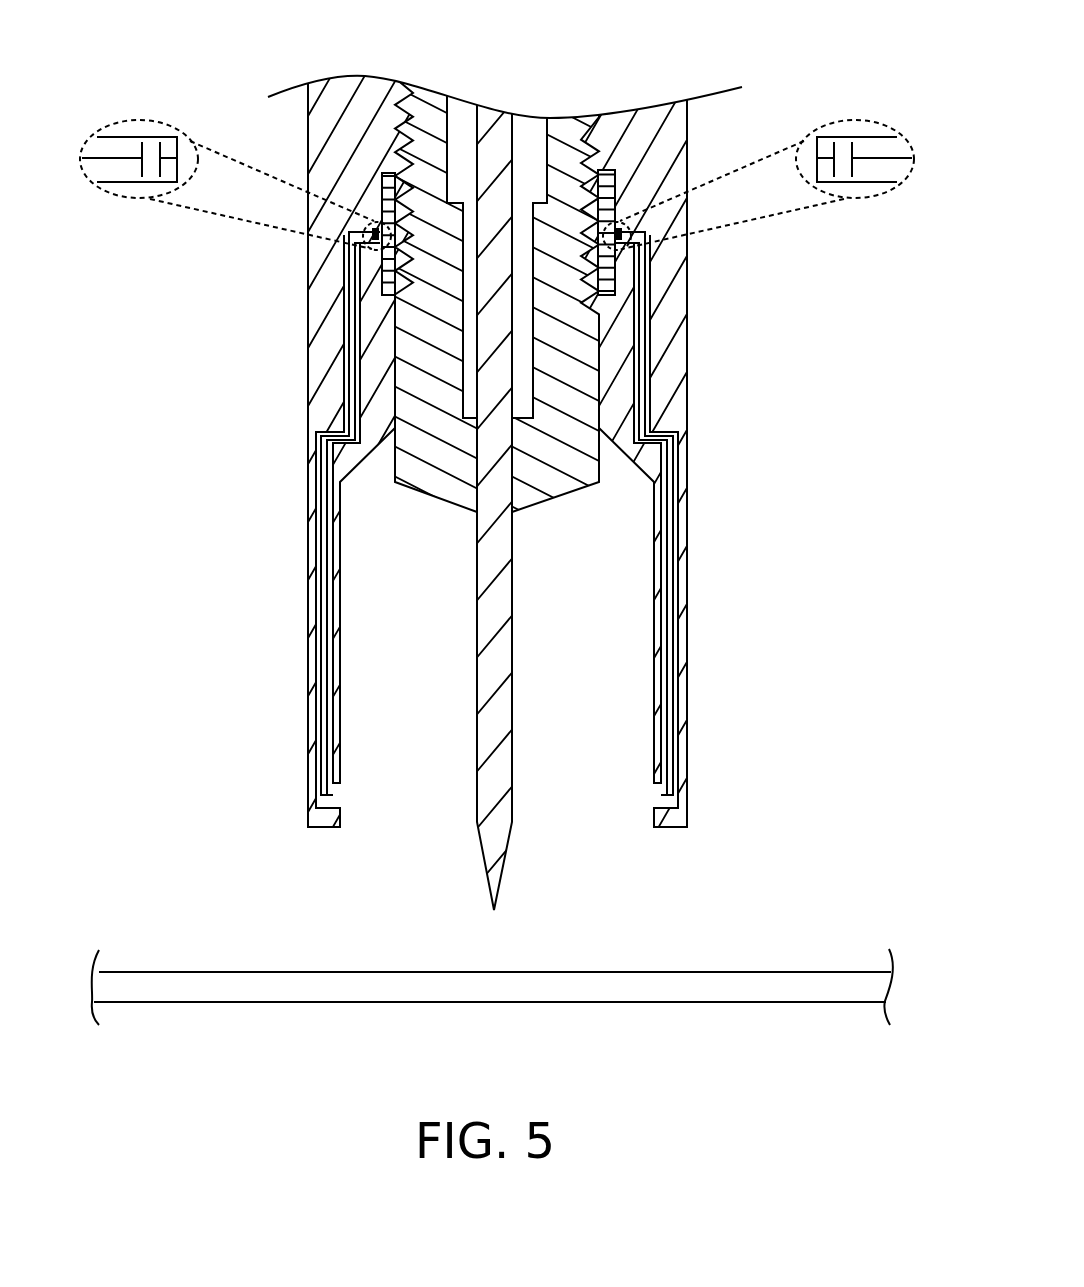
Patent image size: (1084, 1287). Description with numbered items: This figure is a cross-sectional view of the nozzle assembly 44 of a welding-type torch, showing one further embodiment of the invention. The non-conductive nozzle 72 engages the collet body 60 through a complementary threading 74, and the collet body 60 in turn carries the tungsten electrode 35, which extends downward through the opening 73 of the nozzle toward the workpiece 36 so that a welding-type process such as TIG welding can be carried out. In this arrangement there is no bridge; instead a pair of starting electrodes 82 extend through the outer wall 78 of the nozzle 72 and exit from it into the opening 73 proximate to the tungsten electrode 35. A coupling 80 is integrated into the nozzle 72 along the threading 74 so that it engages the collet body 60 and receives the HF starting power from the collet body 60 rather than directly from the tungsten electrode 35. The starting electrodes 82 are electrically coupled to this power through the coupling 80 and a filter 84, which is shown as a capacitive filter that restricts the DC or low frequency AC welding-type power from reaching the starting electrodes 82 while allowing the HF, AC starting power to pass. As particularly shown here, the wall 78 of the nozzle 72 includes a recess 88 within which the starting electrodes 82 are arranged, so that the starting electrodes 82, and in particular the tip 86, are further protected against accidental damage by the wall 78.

The tungsten electrode 35 is at (513, 795).
The workpiece 36 is at (250, 972).
The nozzle assembly 44 is at (791, 352).
The collet body 60 is at (437, 497).
The nozzle 72 is at (736, 617).
The opening 73 is at (575, 870).
The threading 74 is at (406, 66).
The outer wall 78 is at (682, 703).
The coupling 80 is at (388, 160).
The starting electrodes 82 is at (328, 795).
The filter 84 is at (125, 160).
The tip 86 is at (355, 808).
The recess 88 is at (635, 804).